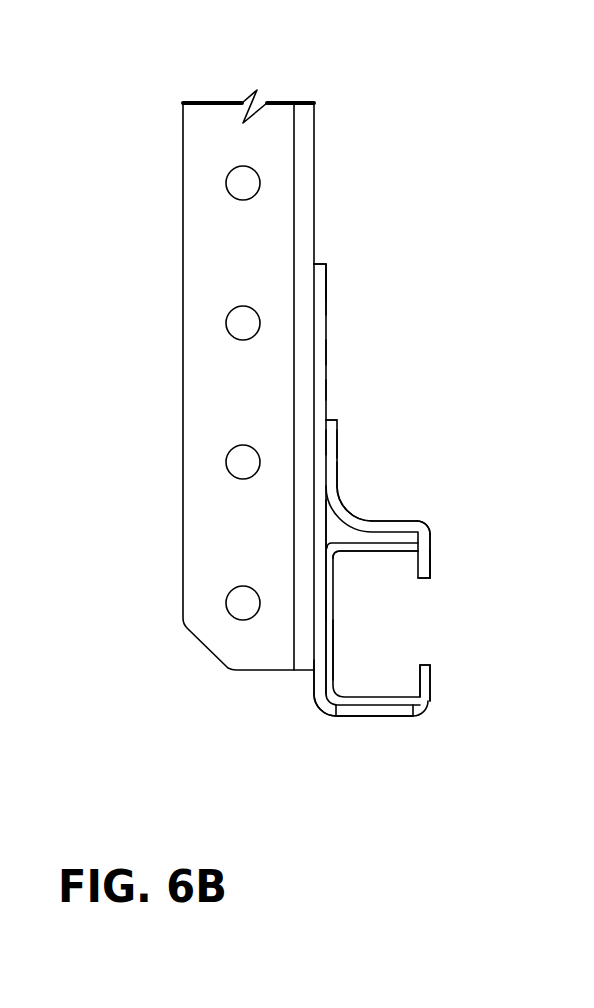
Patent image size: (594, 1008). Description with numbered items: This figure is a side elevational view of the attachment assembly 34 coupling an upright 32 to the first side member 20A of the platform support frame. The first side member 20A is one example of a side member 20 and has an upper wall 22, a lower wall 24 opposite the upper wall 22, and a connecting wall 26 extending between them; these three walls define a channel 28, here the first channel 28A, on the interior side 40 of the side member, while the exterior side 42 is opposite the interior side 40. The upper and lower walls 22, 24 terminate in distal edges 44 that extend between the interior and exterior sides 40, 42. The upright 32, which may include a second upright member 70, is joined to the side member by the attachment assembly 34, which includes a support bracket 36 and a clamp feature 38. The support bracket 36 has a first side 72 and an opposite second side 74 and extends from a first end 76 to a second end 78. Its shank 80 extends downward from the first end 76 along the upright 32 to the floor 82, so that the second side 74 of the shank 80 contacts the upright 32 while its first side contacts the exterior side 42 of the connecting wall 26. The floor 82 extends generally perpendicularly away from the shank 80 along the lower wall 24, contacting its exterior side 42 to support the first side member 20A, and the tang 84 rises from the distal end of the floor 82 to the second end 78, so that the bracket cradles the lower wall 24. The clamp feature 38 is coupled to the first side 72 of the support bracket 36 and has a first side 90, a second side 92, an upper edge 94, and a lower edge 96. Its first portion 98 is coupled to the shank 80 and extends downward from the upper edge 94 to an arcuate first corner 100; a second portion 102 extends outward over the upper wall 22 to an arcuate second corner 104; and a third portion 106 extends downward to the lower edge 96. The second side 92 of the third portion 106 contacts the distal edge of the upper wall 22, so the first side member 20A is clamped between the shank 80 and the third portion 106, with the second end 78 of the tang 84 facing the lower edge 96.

The side member 20 is at (309, 573).
The first side member 20A is at (363, 688).
The upper wall 22 is at (330, 527).
The lower wall 24 is at (313, 688).
The connecting wall 26 is at (327, 630).
The channel 28 is at (403, 607).
The first channel 28A is at (375, 554).
The upright 32 is at (172, 170).
The attachment assembly 34 is at (334, 250).
The support bracket 36 is at (336, 270).
The clamp feature 38 is at (345, 414).
The interior side 40 is at (334, 645).
The exterior side 42 is at (327, 557).
The distal edges 44 is at (430, 547).
The second upright member 70 is at (205, 222).
The first side 72 is at (327, 298).
The second side 74 is at (313, 293).
The first end 76 is at (318, 262).
The second end 78 is at (425, 663).
The shank 80 is at (326, 353).
The floor 82 is at (373, 708).
The tang 84 is at (427, 682).
The first side 90 is at (337, 443).
The second side 92 is at (327, 443).
The upper edge 94 is at (326, 392).
The lower edge 96 is at (427, 580).
The first portion 98 is at (337, 475).
The first corner 100 is at (353, 507).
The second portion 102 is at (390, 518).
The second corner 104 is at (433, 530).
The third portion 106 is at (430, 560).